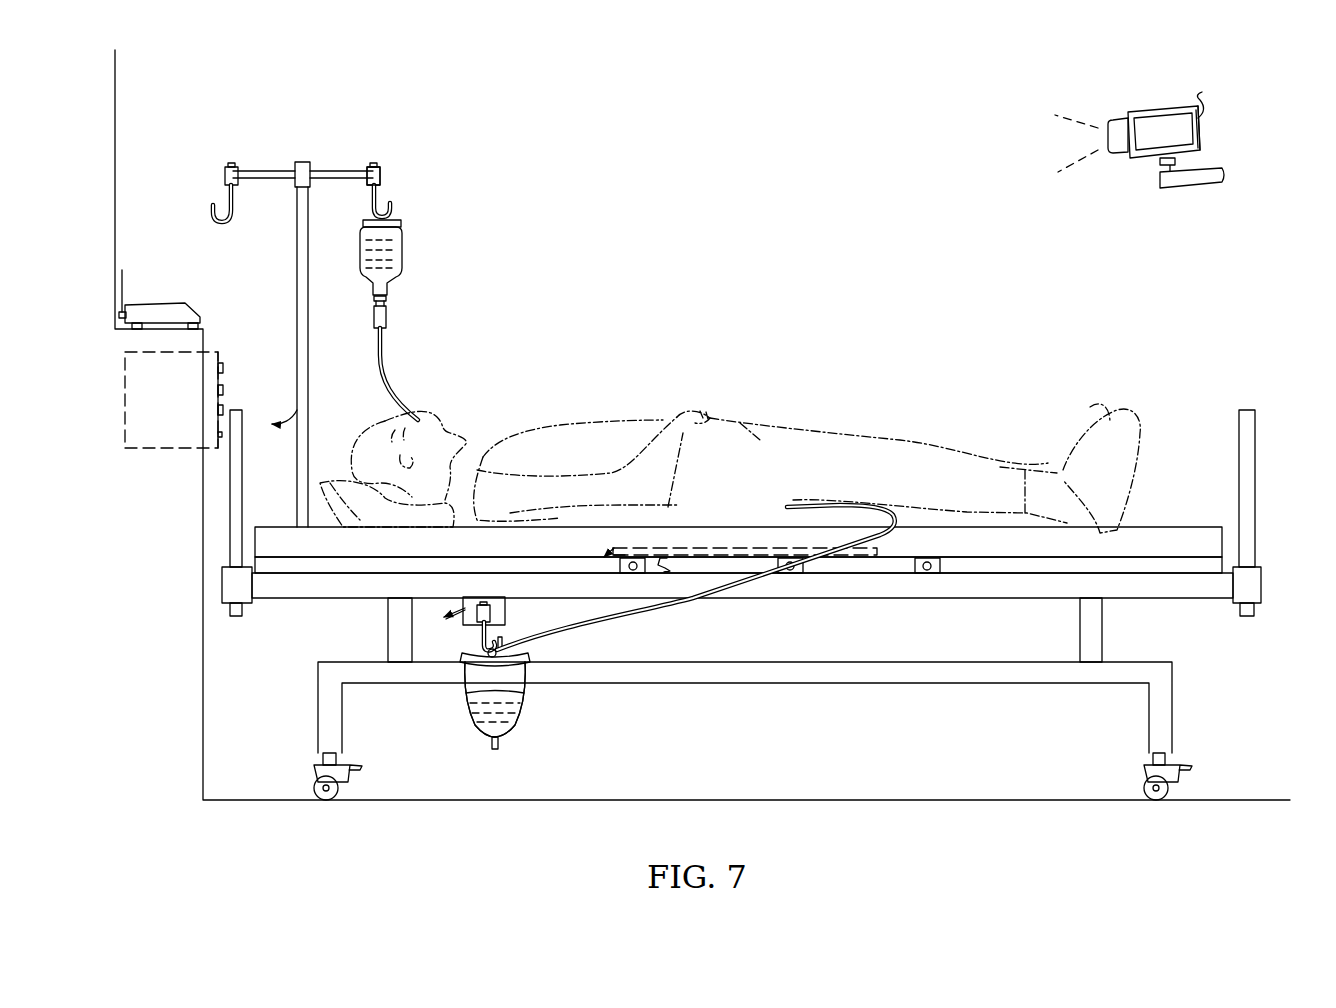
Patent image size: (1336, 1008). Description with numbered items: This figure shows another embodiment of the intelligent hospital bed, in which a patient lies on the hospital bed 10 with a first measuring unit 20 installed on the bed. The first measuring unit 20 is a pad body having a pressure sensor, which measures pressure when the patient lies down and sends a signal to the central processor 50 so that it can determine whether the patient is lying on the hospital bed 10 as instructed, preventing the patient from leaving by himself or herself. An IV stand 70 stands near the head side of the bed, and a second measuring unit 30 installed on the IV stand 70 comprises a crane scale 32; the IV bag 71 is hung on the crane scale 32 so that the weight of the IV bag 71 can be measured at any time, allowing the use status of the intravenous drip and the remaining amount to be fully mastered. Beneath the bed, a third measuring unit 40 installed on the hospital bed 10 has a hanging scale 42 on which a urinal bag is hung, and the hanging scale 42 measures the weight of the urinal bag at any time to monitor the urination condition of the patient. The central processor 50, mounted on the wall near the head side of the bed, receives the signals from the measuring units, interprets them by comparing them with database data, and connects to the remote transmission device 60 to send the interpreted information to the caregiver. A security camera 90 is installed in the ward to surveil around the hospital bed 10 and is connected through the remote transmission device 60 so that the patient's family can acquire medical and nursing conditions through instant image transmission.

The hospital bed 10 is at (1197, 602).
The first measuring unit 20 is at (606, 556).
The second measuring unit 30 is at (393, 172).
The crane scale 32 is at (373, 176).
The third measuring unit 40 is at (477, 641).
The hanging scale 42 is at (495, 699).
The central processor 50 is at (205, 428).
The remote transmission device 60 is at (180, 298).
The IV stand 70 is at (255, 168).
The IV bag 71 is at (398, 250).
The security camera 90 is at (1152, 104).